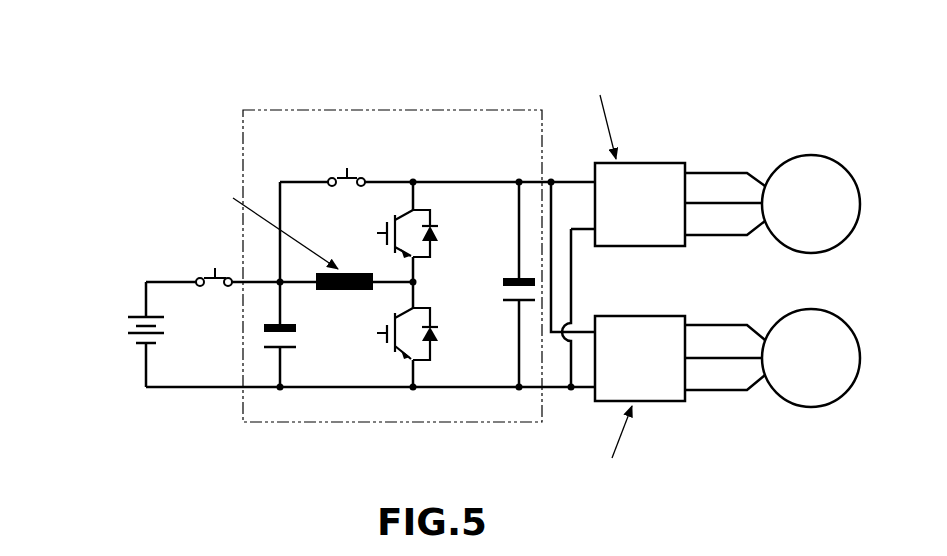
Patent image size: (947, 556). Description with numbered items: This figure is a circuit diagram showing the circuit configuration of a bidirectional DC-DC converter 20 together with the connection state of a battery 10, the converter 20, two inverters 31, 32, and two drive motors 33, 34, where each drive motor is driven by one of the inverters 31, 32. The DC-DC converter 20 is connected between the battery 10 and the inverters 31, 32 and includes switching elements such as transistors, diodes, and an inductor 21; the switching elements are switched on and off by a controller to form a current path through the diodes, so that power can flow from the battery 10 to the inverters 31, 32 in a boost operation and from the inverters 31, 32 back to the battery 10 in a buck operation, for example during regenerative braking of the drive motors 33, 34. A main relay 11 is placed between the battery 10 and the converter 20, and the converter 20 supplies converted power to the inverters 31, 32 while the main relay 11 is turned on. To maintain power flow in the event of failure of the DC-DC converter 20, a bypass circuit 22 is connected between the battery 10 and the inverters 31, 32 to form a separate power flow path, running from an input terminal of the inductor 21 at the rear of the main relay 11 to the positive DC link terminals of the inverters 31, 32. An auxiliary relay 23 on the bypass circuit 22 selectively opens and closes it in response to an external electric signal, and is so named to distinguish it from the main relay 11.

The battery 10 is at (145, 310).
The main relay 11 is at (200, 277).
The bidirectional DC-DC converter 20 is at (463, 110).
The inductor 21 is at (341, 291).
The bypass circuit 22 is at (399, 181).
The auxiliary relay 23 is at (331, 178).
The inverter 31 is at (628, 163).
The inverter 32 is at (635, 316).
The drive motor 33 is at (807, 155).
The drive motor 34 is at (846, 322).